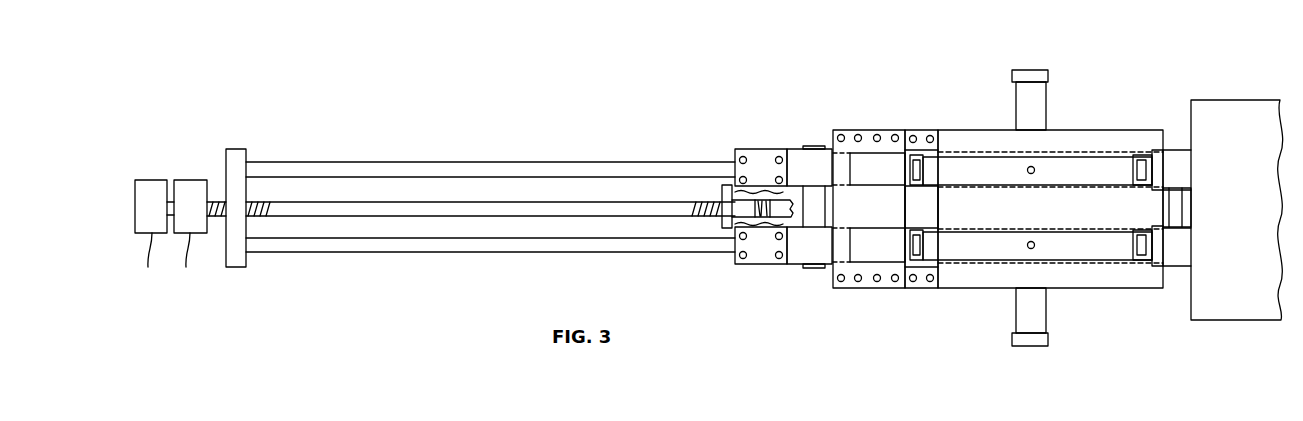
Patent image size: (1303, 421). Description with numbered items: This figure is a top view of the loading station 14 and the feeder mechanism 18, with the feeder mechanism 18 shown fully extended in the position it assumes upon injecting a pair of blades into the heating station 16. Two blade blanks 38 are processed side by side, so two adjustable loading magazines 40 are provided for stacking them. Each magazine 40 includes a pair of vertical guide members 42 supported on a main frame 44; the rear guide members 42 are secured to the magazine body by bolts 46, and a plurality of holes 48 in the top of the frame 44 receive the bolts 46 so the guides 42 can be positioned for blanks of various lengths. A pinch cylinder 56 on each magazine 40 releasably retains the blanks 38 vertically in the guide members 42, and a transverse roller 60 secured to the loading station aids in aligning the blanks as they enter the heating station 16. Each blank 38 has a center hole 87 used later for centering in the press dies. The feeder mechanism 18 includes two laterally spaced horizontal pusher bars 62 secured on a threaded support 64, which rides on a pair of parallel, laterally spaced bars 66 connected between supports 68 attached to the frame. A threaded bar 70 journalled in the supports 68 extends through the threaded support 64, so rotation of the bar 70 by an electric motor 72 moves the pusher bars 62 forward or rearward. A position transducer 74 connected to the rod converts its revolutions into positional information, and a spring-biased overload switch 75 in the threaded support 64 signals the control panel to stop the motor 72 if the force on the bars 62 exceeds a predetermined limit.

The loading station 14 is at (843, 58).
The heating station 16 is at (1227, 75).
The feeder mechanism 18 is at (647, 118).
The blade blank 38 is at (1048, 202).
The adjustable loading magazine 40 is at (887, 130).
The vertical guide member 42 is at (928, 170).
The main frame 44 is at (1003, 288).
The bolt 46 is at (930, 135).
The hole 48 is at (877, 135).
The pinch cylinder 56 is at (1046, 102).
The transverse roller 60 is at (1182, 198).
The horizontal pusher bar 62 is at (819, 177).
The threaded support 64 is at (752, 264).
The parallel laterally spaced bar 66 is at (532, 162).
The support 68 is at (236, 267).
The threaded bar 70 is at (449, 202).
The electric motor 72 is at (200, 180).
The position transducer 74 is at (160, 180).
The spring-biased overload switch 75 is at (722, 214).
The center hole 87 is at (1035, 245).